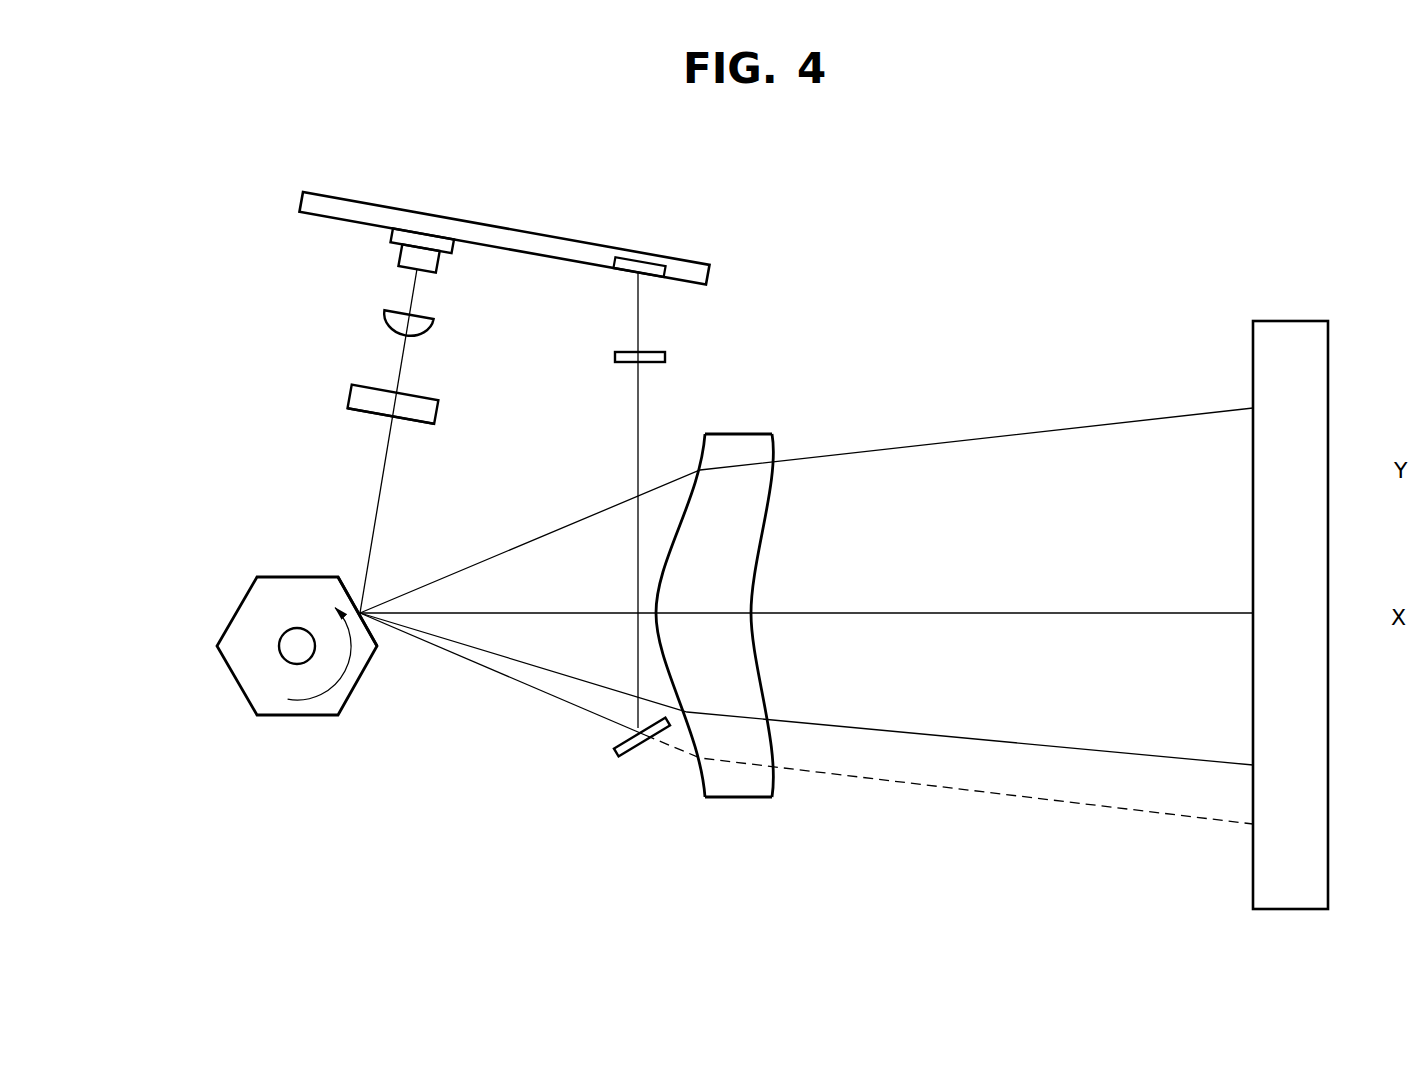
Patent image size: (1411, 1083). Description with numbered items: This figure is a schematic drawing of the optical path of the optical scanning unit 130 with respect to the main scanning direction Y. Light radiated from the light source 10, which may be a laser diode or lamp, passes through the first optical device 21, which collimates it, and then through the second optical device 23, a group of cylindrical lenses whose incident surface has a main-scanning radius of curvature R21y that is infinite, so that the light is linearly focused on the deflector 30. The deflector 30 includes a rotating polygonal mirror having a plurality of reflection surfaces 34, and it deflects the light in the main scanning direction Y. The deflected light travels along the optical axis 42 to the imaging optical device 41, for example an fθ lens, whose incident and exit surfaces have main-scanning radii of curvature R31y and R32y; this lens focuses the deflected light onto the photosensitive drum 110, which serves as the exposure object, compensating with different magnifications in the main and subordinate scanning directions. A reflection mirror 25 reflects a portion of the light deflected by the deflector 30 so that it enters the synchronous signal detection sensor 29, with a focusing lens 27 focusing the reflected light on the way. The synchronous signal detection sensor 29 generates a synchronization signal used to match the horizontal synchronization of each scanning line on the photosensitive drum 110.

The light source 10 is at (397, 248).
The first optical device 21 is at (385, 315).
The second optical device 23 is at (363, 400).
The radius of curvature of second optical device incident surface in main scanning d R21y is at (422, 392).
The reflection mirror 25 is at (617, 750).
The focusing lens 27 is at (660, 362).
The synchronous signal detection sensor 29 is at (657, 277).
The deflector 30 is at (225, 594).
The reflection surface 34 is at (343, 577).
The imaging optical device 41 is at (752, 678).
The radius of curvature of imaging optical device incident surface in main scanning R31y is at (665, 547).
The radius of curvature of imaging optical device exit surface in main scanning dire R32y is at (767, 550).
The optical axis 42 is at (984, 614).
The photosensitive drum 110 is at (1301, 335).
The optical scanning unit 130 is at (425, 733).